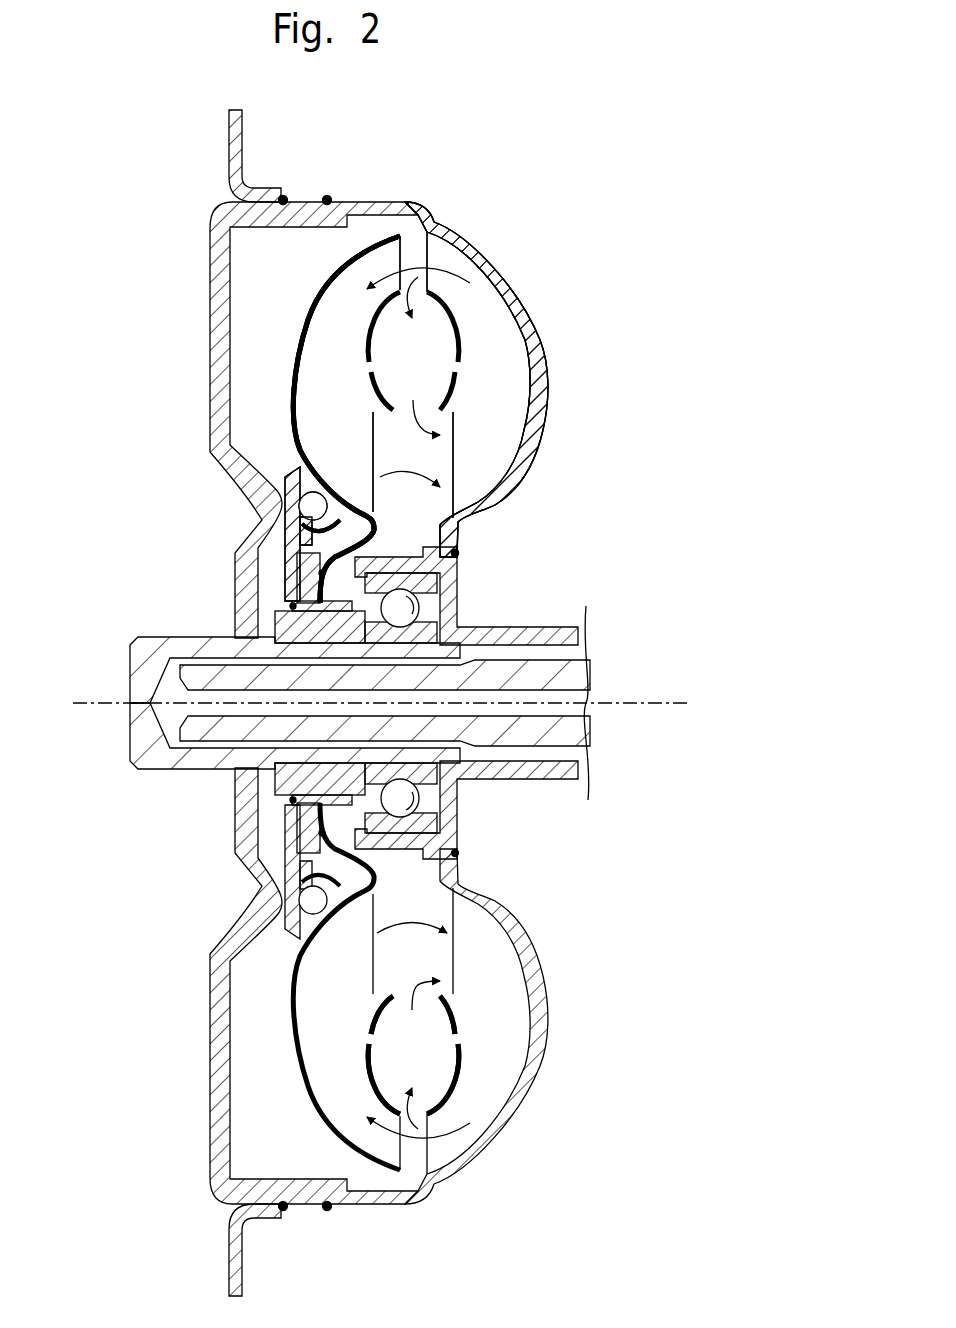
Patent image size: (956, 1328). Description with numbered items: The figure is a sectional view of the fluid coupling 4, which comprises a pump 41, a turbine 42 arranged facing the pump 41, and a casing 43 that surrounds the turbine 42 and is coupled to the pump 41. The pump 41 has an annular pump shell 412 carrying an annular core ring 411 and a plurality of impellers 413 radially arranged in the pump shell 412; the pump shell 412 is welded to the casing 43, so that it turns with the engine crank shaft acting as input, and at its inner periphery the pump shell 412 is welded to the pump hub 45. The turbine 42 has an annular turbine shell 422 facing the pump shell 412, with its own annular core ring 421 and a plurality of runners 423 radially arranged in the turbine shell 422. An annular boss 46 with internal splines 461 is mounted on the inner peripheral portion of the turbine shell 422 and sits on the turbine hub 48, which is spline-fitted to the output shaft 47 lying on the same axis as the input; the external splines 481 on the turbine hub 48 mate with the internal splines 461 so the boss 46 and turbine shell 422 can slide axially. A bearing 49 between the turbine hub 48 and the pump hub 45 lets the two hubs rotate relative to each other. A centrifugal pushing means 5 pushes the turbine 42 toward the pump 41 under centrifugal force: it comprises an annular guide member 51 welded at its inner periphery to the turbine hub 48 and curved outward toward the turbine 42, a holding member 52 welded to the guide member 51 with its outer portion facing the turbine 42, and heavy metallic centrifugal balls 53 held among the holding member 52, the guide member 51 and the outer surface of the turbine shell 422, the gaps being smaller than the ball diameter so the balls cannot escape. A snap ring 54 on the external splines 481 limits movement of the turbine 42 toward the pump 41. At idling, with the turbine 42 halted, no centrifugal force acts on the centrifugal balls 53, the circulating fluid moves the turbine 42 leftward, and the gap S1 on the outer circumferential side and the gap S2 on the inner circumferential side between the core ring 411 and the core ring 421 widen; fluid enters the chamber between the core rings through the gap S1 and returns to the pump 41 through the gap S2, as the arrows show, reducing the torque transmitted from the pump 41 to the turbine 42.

The fluid coupling 4 is at (484, 203).
The pump 41 is at (498, 245).
The core ring 411 is at (460, 327).
The pump shell 412 is at (547, 378).
The impellers 413 is at (485, 292).
The turbine 42 is at (312, 295).
The core ring 421 is at (300, 331).
The turbine shell 422 is at (290, 365).
The runners 423 is at (343, 420).
The casing 43 is at (217, 298).
The pump hub 45 is at (455, 575).
The boss 46 is at (318, 573).
The internal splines 461 is at (291, 606).
The output shaft 47 is at (540, 745).
The turbine hub 48 is at (297, 650).
The external splines 481 is at (340, 620).
The bearing 49 is at (412, 600).
The centrifugal pushing means 5 is at (280, 463).
The guide member 51 is at (290, 490).
The holding member 52 is at (268, 528).
The centrifugal balls 53 is at (300, 505).
The snap ring 54 is at (293, 800).
The gap on the outer circumferential side S1 is at (377, 1070).
The gap on the inner circumferential side S2 is at (412, 967).